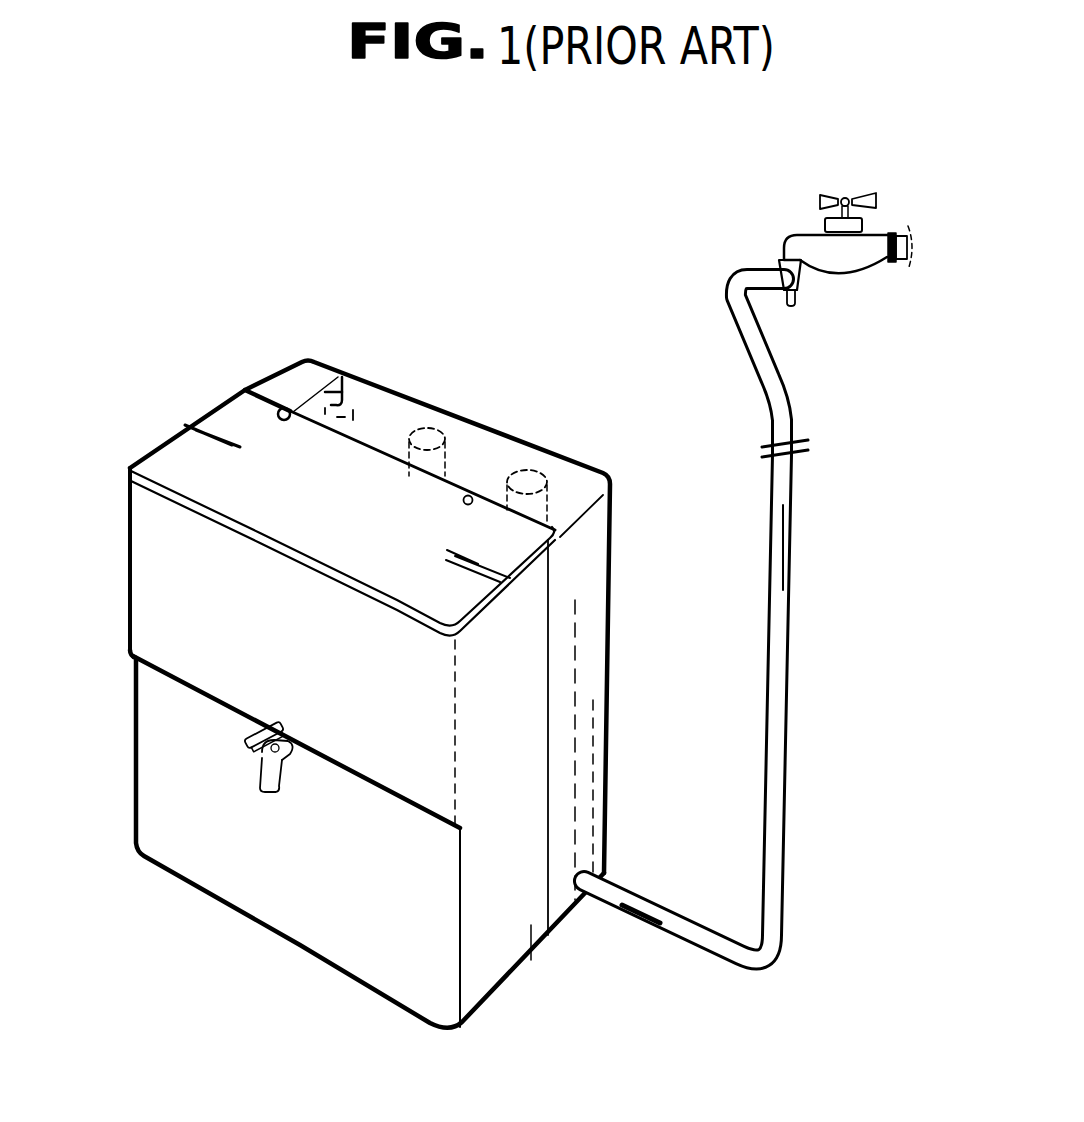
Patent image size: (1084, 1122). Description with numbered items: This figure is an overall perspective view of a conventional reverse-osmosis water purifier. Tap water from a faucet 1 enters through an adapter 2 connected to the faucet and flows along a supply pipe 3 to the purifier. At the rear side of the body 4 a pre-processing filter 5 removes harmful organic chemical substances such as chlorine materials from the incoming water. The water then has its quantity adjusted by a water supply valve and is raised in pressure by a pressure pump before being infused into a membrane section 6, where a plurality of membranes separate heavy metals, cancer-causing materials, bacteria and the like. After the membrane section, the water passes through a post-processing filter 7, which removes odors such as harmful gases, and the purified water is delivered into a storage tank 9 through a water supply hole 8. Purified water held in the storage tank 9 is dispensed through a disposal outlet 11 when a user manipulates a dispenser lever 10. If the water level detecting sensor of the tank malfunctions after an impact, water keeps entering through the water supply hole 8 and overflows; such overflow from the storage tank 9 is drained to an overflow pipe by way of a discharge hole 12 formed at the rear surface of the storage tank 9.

The faucet 1 is at (803, 244).
The adapter 2 is at (798, 284).
The supply pipe 3 is at (778, 665).
The body 4 is at (530, 962).
The pre-processing filter 5 is at (553, 470).
The membrane section 6 is at (443, 447).
The post-processing filter 7 is at (360, 425).
The water supply hole 8 is at (279, 409).
The storage tank 9 is at (208, 621).
The dispenser lever 10 is at (257, 775).
The disposal outlet 11 is at (262, 790).
The discharge hole 12 is at (470, 496).